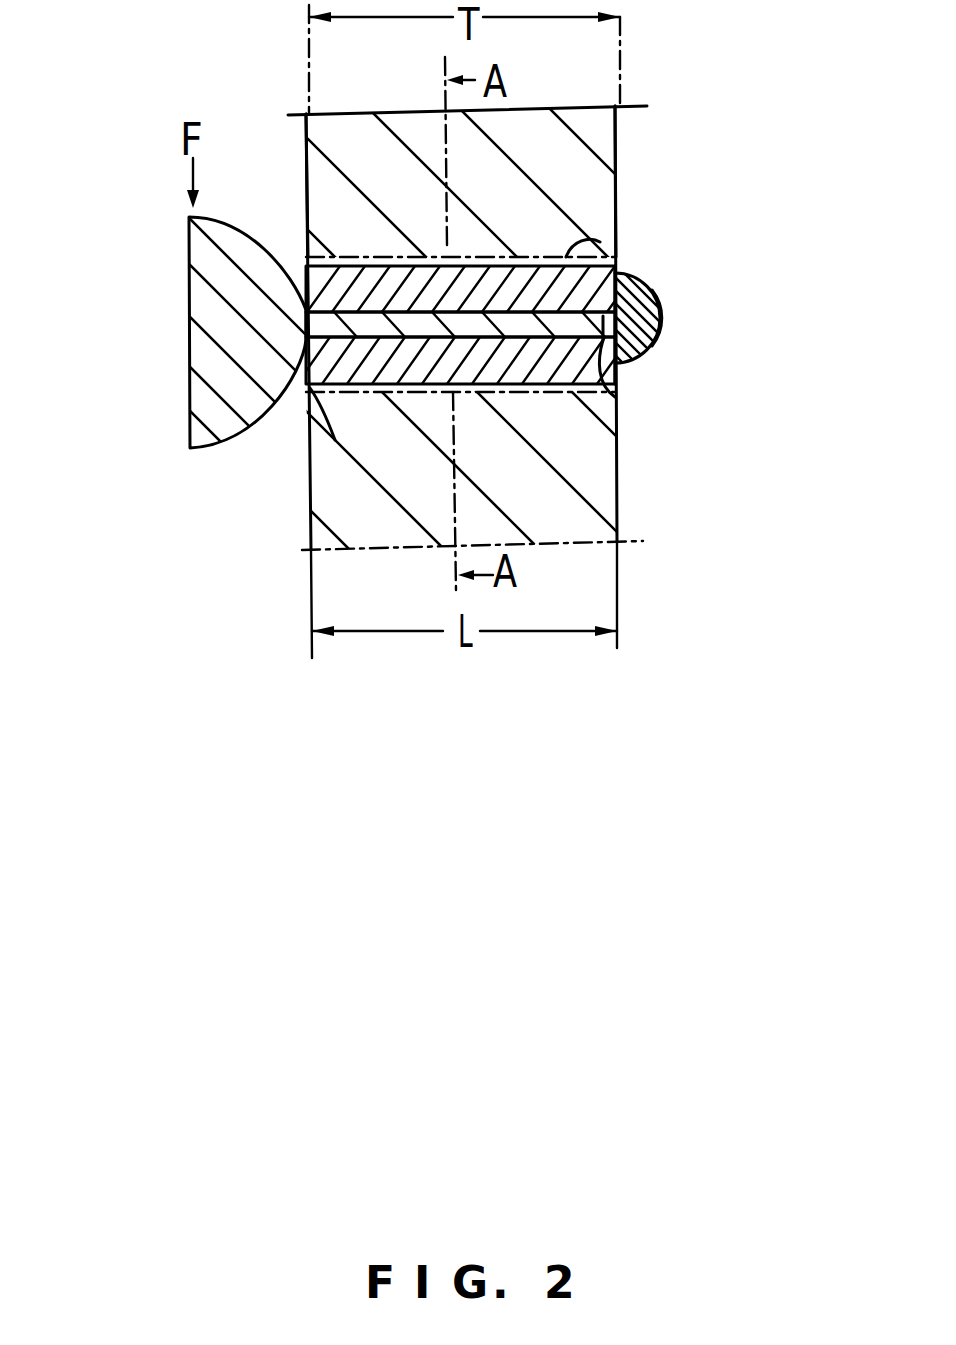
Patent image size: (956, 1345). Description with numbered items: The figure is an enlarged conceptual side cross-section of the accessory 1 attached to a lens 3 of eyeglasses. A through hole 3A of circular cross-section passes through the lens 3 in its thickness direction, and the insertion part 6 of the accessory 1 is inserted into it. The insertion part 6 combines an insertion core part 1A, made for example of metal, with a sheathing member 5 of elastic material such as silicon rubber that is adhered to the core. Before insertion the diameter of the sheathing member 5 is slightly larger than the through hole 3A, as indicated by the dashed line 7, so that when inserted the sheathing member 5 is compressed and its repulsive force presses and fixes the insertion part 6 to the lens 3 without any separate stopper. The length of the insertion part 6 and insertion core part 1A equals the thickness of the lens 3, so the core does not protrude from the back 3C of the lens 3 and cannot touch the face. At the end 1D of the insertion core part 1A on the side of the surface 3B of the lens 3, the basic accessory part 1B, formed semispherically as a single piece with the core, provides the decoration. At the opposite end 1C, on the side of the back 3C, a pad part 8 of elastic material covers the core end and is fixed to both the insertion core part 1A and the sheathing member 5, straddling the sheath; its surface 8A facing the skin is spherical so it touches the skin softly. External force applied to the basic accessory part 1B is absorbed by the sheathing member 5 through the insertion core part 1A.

The accessory 1 is at (438, 357).
The insertion core part 1A is at (614, 426).
The basic accessory part 1B is at (207, 298).
The end of the insertion core part 1C is at (615, 400).
The end of the insertion core part 1D is at (310, 426).
The lens 3 is at (606, 166).
The through hole 3A is at (600, 242).
The surface of the lens 3B is at (306, 159).
The back of the lens 3C is at (616, 133).
The sheathing member 5 is at (340, 263).
The insertion part 6 is at (414, 396).
The dashed line 7 is at (503, 337).
The pad part 8 is at (654, 294).
The surface of the pad part 8A is at (661, 328).